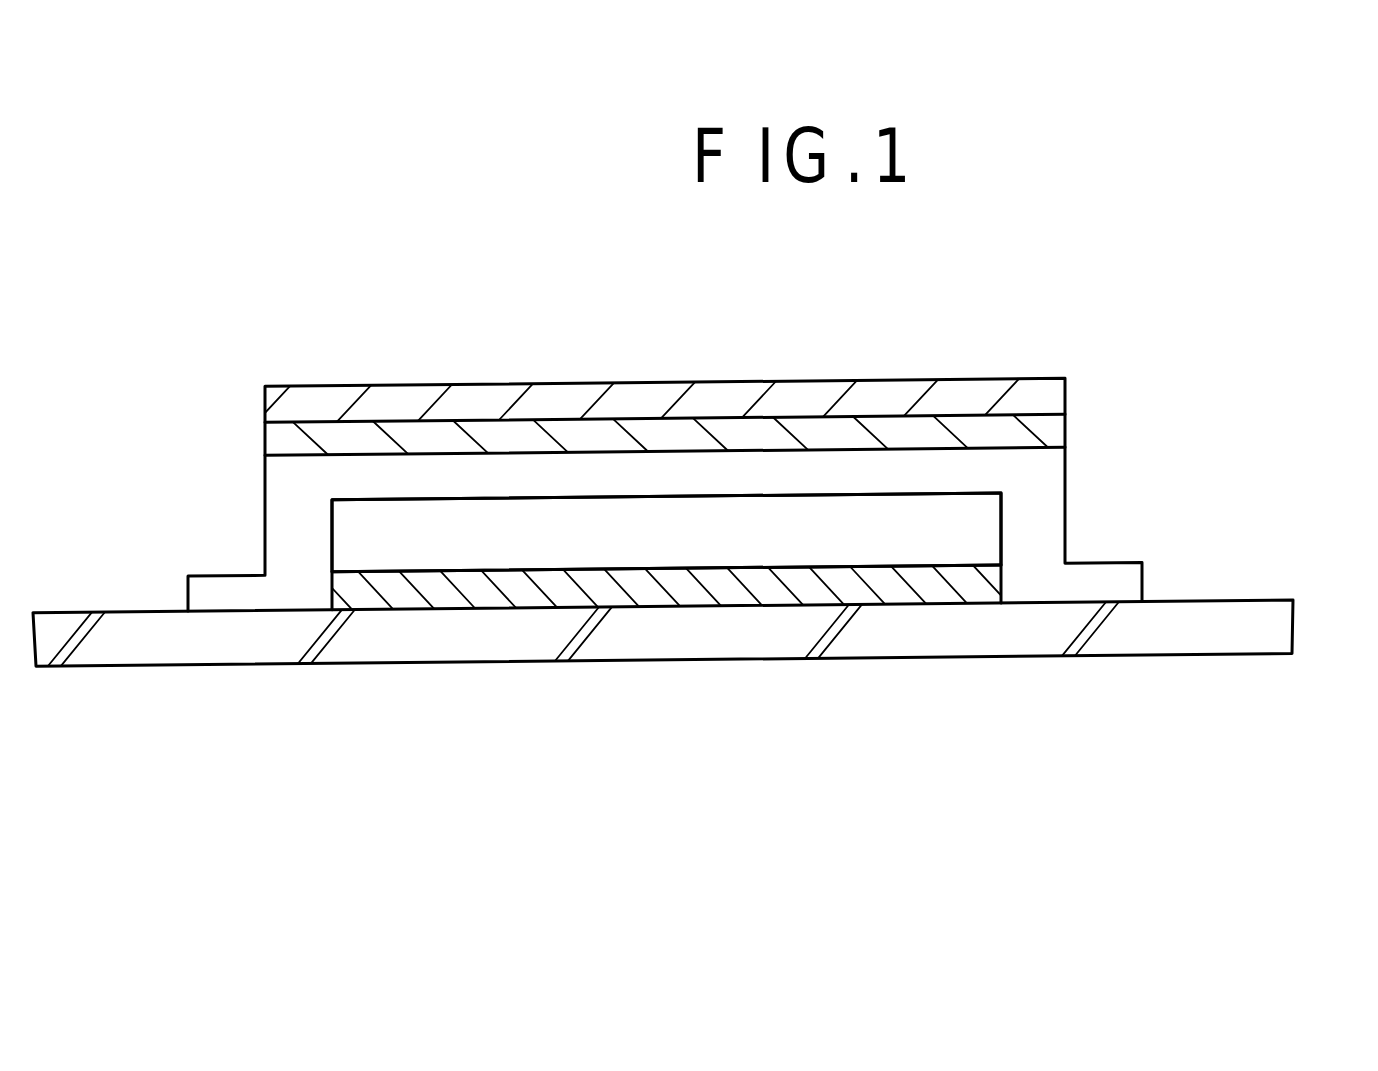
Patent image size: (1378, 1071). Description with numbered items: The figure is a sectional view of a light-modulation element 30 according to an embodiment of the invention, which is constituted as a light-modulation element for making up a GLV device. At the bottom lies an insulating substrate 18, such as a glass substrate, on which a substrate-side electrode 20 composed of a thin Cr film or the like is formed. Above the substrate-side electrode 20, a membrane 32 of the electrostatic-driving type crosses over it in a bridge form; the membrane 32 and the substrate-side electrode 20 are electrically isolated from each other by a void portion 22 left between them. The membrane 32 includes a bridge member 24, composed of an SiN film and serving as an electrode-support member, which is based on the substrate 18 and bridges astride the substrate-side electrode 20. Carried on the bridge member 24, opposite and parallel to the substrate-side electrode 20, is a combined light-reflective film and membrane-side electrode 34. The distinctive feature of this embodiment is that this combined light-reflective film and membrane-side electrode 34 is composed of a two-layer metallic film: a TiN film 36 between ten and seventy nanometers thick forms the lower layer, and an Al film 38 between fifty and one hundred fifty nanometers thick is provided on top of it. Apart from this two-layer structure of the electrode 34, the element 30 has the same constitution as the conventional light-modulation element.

The insulating substrate 18 is at (298, 667).
The substrate-side electrode 20 is at (790, 593).
The void portion 22 is at (677, 552).
The bridge member 24 is at (1038, 516).
The light-modulation element 30 is at (780, 485).
The membrane 32 is at (780, 468).
The combined light-reflective film and membrane-side electrode 34 is at (770, 390).
The TiN film 36 is at (1047, 423).
The Al film 38 is at (1047, 386).